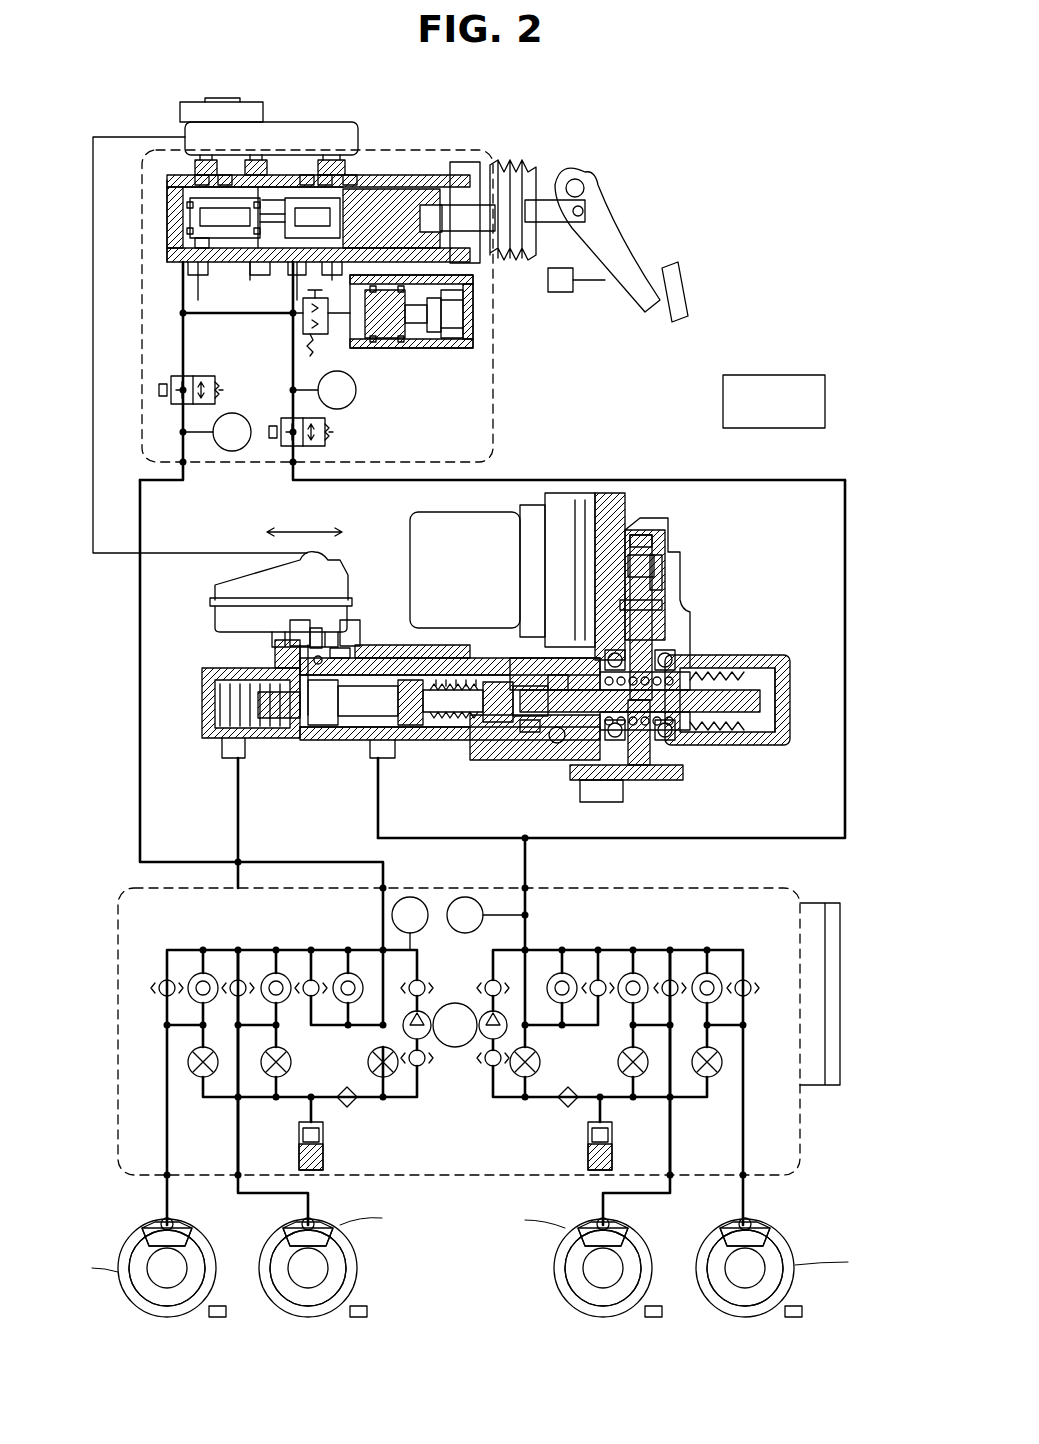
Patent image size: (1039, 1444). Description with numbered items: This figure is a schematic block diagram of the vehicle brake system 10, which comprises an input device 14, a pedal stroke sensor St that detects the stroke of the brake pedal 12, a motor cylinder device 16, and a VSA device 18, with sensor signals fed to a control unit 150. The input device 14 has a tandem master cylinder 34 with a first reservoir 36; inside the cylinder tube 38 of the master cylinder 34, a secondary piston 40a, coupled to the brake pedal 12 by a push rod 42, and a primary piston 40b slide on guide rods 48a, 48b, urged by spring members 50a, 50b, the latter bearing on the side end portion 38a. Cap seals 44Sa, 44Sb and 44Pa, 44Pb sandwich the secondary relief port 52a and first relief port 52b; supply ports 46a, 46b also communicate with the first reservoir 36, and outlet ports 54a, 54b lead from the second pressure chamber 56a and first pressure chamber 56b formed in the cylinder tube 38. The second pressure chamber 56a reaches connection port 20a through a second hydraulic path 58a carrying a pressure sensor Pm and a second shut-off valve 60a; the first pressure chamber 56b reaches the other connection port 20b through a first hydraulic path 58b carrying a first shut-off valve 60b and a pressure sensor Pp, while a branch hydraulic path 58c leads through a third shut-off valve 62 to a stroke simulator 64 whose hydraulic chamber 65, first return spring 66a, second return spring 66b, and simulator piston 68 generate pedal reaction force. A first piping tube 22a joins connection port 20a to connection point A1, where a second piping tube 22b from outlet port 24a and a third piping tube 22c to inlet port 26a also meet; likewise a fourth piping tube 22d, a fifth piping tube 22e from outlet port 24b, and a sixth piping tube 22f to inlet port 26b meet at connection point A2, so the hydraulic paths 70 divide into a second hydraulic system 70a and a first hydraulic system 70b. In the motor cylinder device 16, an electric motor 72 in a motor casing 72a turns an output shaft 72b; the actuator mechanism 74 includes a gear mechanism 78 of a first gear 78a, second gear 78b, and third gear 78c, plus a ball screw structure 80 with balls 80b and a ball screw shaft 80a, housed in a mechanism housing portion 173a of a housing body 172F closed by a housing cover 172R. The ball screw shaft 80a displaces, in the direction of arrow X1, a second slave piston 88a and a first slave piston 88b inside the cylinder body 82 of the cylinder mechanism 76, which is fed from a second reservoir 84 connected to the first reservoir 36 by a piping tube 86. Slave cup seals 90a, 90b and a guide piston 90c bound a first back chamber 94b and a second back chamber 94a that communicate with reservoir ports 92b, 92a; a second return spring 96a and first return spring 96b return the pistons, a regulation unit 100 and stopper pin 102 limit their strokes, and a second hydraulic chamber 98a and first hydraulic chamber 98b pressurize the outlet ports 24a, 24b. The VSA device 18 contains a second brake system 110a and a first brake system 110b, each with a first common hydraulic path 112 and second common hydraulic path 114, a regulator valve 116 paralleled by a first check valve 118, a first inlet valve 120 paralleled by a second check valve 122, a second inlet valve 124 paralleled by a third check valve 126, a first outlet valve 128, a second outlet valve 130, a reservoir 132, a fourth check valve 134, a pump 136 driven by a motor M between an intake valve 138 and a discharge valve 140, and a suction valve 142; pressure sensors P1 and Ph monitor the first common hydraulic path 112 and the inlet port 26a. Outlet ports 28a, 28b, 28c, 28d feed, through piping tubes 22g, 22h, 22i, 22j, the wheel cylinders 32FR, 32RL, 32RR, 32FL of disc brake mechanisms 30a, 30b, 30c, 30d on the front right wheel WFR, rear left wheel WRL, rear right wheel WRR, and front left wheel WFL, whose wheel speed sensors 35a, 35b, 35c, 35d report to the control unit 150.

The vehicle brake system 10 is at (619, 137).
The brake pedal 12 is at (685, 290).
The input device 14 is at (495, 382).
The motor cylinder device 16 is at (671, 522).
The vehicle behavior stabilizing device 18 is at (712, 885).
The connection port 20a is at (290, 470).
The connection port 20b is at (186, 470).
The first piping tube 22a is at (847, 566).
The second piping tube 22b is at (380, 835).
The third piping tube 22c is at (527, 862).
The fourth piping tube 22d is at (138, 648).
The fifth piping tube 22e is at (236, 816).
The sixth piping tube 22f is at (314, 860).
The seventh piping tube 22g is at (746, 1210).
The eighth piping tube 22h is at (603, 1210).
The ninth piping tube 22i is at (310, 1206).
The tenth piping tube 22j is at (165, 1212).
The outlet port 24a is at (385, 760).
The outlet port 24b is at (225, 752).
The inlet port 26a is at (530, 886).
The inlet port 26b is at (388, 885).
The first outlet port 28a is at (748, 1180).
The second outlet port 28b is at (674, 1178).
The third outlet port 28c is at (236, 1178).
The fourth outlet port 28d is at (165, 1178).
The disc brake mechanism 30a is at (795, 1281).
The disc brake mechanism 30b is at (651, 1277).
The disc brake mechanism 30c is at (357, 1276).
The disc brake mechanism 30d is at (214, 1277).
The wheel cylinder 32FL is at (190, 1230).
The wheel cylinder 32RR is at (333, 1236).
The wheel cylinder 32RL is at (628, 1230).
The wheel cylinder 32FR is at (772, 1236).
The master cylinder 34 is at (400, 168).
The wheel speed sensor 35a is at (802, 1312).
The wheel speed sensor 35b is at (662, 1316).
The wheel speed sensor 35c is at (367, 1316).
The wheel speed sensor 35d is at (226, 1316).
The first reservoir 36 is at (360, 125).
The cylinder tube 38 is at (415, 188).
The side end portion 38a is at (188, 196).
The secondary piston 40a is at (452, 255).
The primary piston 40b is at (262, 250).
The push rod 42 is at (450, 205).
The cap seal 44Sa is at (205, 250).
The cap seal 44Sb is at (255, 275).
The cap seal 44Pa is at (305, 250).
The cap seal 44Pb is at (340, 250).
The secondary supply port 46a is at (351, 168).
The first supply port 46b is at (226, 175).
The guide rod 48a is at (318, 198).
The guide rod 48b is at (190, 215).
The spring member 50a is at (275, 200).
The spring member 50b is at (170, 245).
The secondary relief port 52a is at (326, 175).
The first relief port 52b is at (200, 175).
The outlet port 54a is at (290, 312).
The outlet port 54b is at (186, 265).
The second pressure chamber 56a is at (305, 175).
The first pressure chamber 56b is at (192, 180).
The second hydraulic path 58a is at (292, 378).
The first hydraulic path 58b is at (164, 377).
The branch hydraulic path 58c is at (240, 315).
The second shut-off valve 60a is at (325, 440).
The first shut-off valve 60b is at (198, 376).
The third shut-off valve 62 is at (322, 336).
The stroke simulator 64 is at (484, 289).
The hydraulic chamber 65 is at (375, 345).
The first return spring 66a is at (455, 340).
The second return spring 66b is at (432, 340).
The simulator piston 68 is at (410, 340).
The cylinder mechanism 70 is at (450, 702).
The second hydraulic system 70a is at (597, 466).
The first hydraulic system 70b is at (119, 710).
The electric motor 72 is at (440, 505).
The motor casing 72a is at (475, 530).
The output shaft 72b is at (655, 566).
The actuator mechanism 74 is at (765, 615).
The cylinder mechanism 76 is at (193, 716).
The gear mechanism 78 is at (675, 625).
The first gear 78a is at (640, 535).
The second gear 78b is at (660, 595).
The third gear 78c is at (672, 770).
The ball screw structure 80 is at (735, 660).
The ball screw shaft 80a is at (762, 735).
The balls 80b is at (700, 672).
The cylinder body 82 is at (470, 730).
The second reservoir 84 is at (212, 588).
The piping tube 86 is at (93, 385).
The second slave piston 88a is at (528, 760).
The first slave piston 88b is at (355, 740).
The slave cup seal 90a is at (380, 740).
The slave cup seal 90b is at (278, 740).
The guide piston 90c is at (555, 745).
The reservoir port 92a is at (350, 620).
The reservoir port 92b is at (290, 645).
The second back chamber 94a is at (520, 770).
The first back chamber 94b is at (322, 740).
The second return spring 96a is at (370, 648).
The first return spring 96b is at (270, 668).
The second hydraulic chamber 98a is at (460, 728).
The first hydraulic chamber 98b is at (215, 690).
The regulation unit 100 is at (430, 730).
The stopper pin 102 is at (304, 740).
The second brake system 110a is at (740, 938).
The first brake system 110b is at (175, 938).
The first common hydraulic path 112 is at (242, 945).
The second common hydraulic path 114 is at (242, 1100).
The regulator valve 116 is at (350, 970).
The first check valve 118 is at (311, 978).
The first inlet valve 120 is at (198, 970).
The second check valve 122 is at (162, 978).
The second inlet valve 124 is at (276, 970).
The third check valve 126 is at (236, 978).
The first outlet valve 128 is at (202, 1080).
The second outlet valve 130 is at (292, 1053).
The reservoir 132 is at (323, 1150).
The fourth check valve 134 is at (348, 1108).
The pump 136 is at (480, 1040).
The intake valve 138 is at (484, 1066).
The discharge valve 140 is at (485, 985).
The suction valve 142 is at (386, 1100).
The control unit 150 is at (750, 375).
The housing body 172F is at (620, 800).
The housing cover 172R is at (790, 740).
The mechanism housing portion 173a is at (592, 802).
The connection point A1 is at (523, 826).
The connection point A2 is at (251, 855).
The motor M is at (455, 1025).
The pressure sensor P1 is at (410, 923).
The pressure sensor Ph is at (488, 915).
The pressure sensor Pm is at (323, 390).
The pressure sensor Pp is at (216, 432).
The pedal stroke sensor St is at (565, 292).
The front left wheel WFL is at (133, 1267).
The front right wheel WFR is at (794, 1267).
The rear left wheel WRL is at (565, 1262).
The rear right wheel WRR is at (344, 1261).
The arrow direction X1 is at (303, 532).